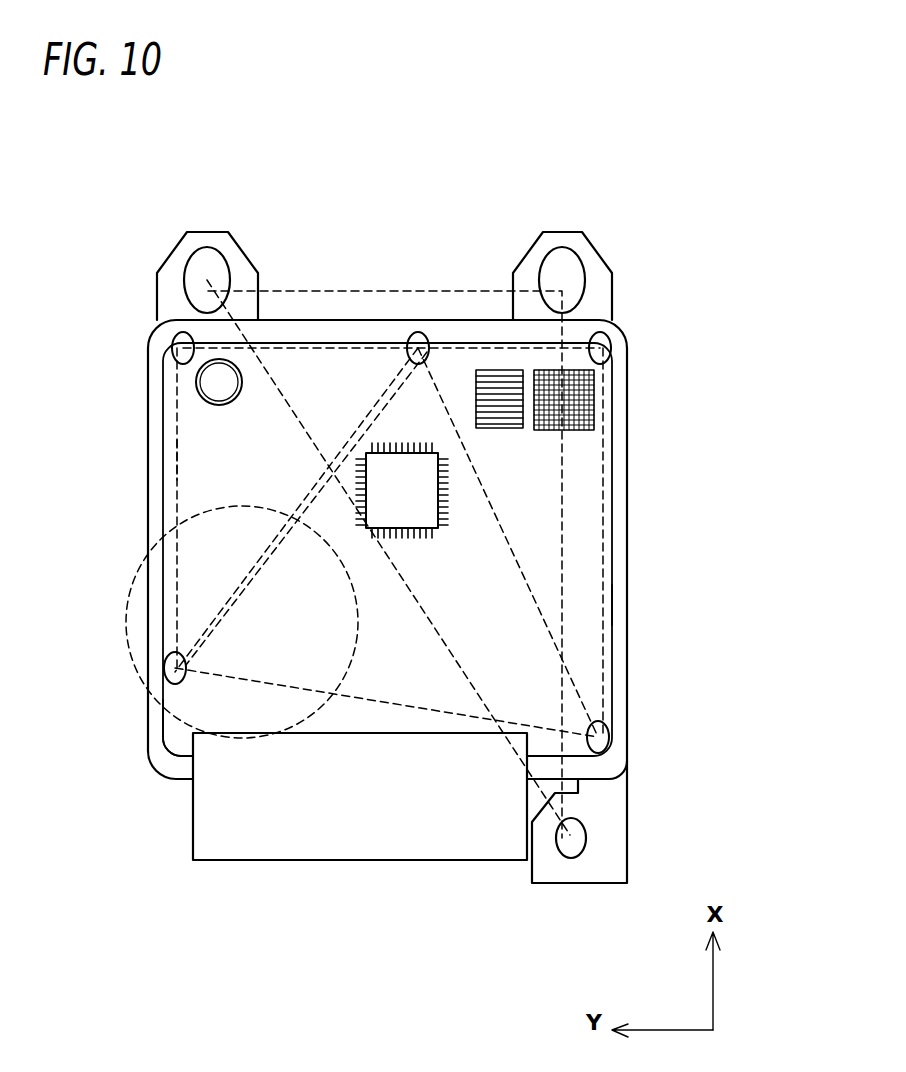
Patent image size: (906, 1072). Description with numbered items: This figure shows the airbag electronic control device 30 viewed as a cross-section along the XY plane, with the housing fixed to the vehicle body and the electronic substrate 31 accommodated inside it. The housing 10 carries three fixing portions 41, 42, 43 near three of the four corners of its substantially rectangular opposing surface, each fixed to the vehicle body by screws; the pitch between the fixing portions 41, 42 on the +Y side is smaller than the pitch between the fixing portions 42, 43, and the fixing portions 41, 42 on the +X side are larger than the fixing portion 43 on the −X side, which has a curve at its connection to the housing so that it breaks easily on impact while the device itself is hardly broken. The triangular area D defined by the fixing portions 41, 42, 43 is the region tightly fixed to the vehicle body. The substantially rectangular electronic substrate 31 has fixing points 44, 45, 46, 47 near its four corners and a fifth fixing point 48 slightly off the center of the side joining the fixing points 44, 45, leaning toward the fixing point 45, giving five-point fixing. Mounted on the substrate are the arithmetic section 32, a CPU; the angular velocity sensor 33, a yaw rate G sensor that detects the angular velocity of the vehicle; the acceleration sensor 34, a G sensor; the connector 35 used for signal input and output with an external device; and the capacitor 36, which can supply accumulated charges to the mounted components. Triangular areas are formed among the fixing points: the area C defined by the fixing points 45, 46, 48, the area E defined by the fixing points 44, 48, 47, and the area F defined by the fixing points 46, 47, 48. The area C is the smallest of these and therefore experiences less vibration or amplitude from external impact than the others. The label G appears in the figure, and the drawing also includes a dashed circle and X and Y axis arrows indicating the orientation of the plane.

The case body 10 is at (627, 497).
The airbag electronic control device 30 is at (372, 312).
The electronic substrate 31 is at (360, 725).
The arithmetic section 32 is at (407, 497).
The angular velocity sensor 33 is at (502, 392).
The acceleration sensor 34 is at (583, 402).
The connector 35 is at (252, 818).
The capacitor 36 is at (220, 382).
The fixing portion 41 is at (208, 267).
The fixing portion 42 is at (570, 267).
The fixing portion 43 is at (580, 840).
The fixing point 44 is at (183, 348).
The fixing point 45 is at (604, 346).
The fixing point 46 is at (610, 732).
The fixing point 47 is at (173, 665).
The fixing point 48 is at (420, 340).
The area C is at (604, 610).
The area D is at (563, 723).
The area E is at (183, 463).
The area F is at (450, 713).
The point G is at (172, 715).